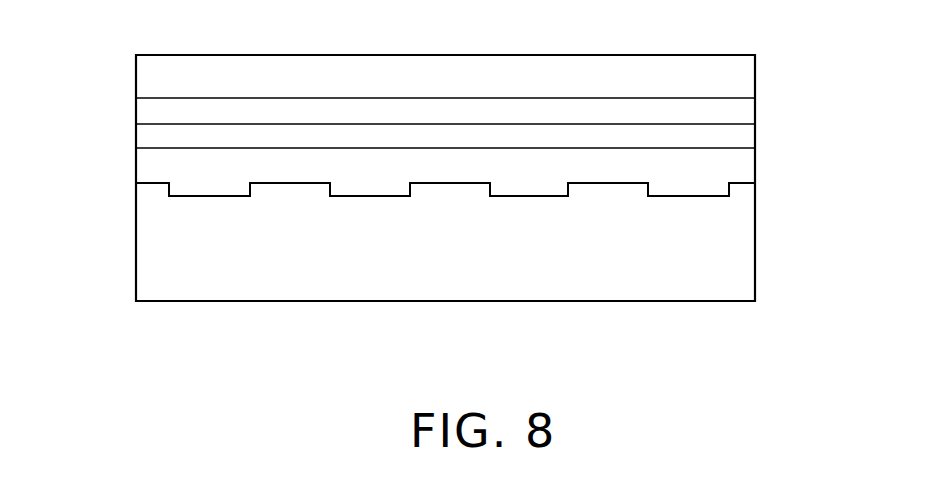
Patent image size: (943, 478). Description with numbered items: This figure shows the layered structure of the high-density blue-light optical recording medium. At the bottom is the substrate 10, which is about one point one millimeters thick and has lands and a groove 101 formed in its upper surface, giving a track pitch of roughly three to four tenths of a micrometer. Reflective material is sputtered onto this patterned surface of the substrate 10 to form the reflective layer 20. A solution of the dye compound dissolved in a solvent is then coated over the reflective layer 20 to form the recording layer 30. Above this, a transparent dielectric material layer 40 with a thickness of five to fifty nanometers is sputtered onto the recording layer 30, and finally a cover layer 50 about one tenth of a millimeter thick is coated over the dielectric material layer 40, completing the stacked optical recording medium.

The substrate 10 is at (738, 231).
The groove 101 is at (205, 188).
The reflective layer 20 is at (739, 169).
The recording layer 30 is at (743, 134).
The transparent dielectric material layer 40 is at (743, 108).
The cover layer 50 is at (738, 69).